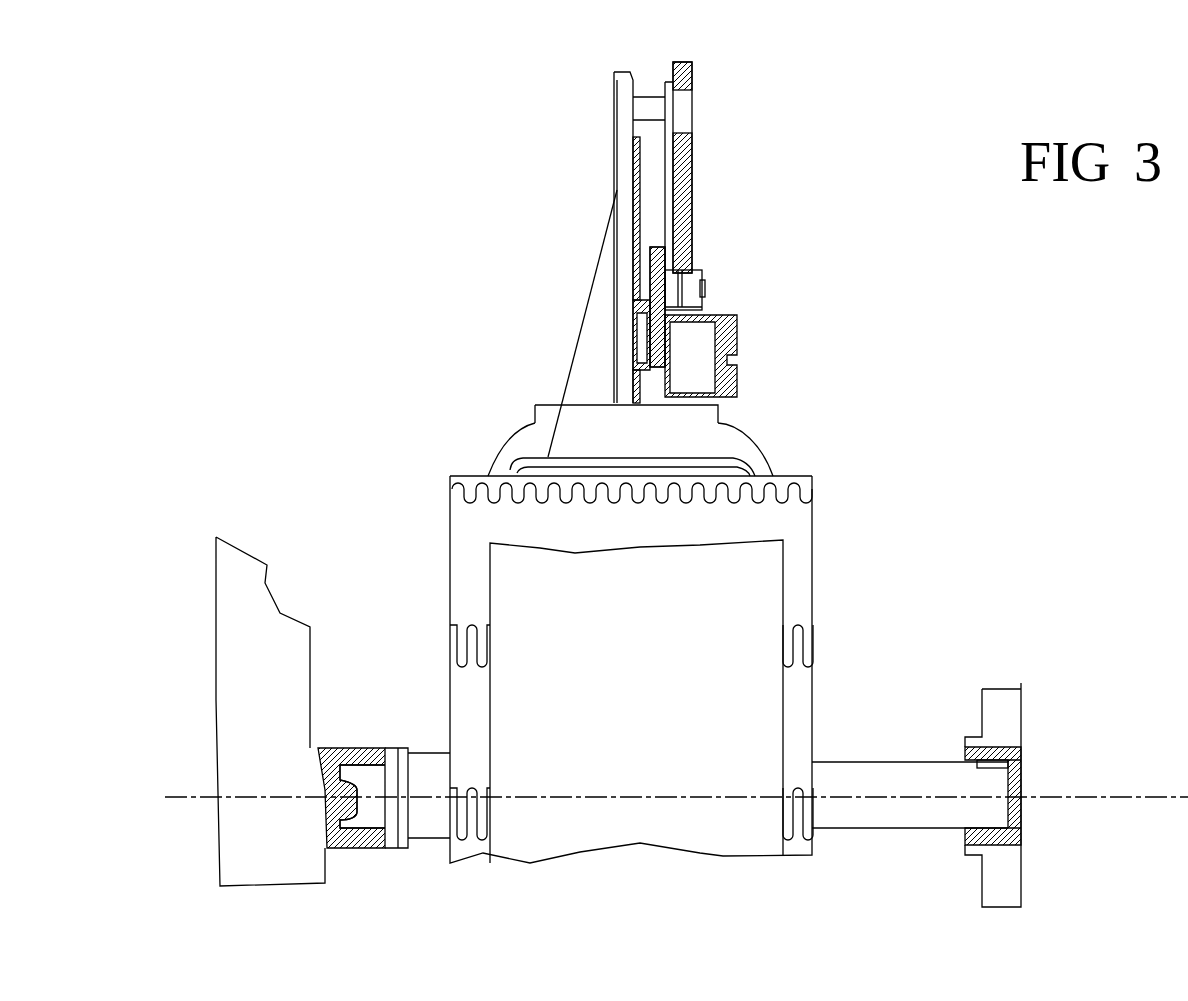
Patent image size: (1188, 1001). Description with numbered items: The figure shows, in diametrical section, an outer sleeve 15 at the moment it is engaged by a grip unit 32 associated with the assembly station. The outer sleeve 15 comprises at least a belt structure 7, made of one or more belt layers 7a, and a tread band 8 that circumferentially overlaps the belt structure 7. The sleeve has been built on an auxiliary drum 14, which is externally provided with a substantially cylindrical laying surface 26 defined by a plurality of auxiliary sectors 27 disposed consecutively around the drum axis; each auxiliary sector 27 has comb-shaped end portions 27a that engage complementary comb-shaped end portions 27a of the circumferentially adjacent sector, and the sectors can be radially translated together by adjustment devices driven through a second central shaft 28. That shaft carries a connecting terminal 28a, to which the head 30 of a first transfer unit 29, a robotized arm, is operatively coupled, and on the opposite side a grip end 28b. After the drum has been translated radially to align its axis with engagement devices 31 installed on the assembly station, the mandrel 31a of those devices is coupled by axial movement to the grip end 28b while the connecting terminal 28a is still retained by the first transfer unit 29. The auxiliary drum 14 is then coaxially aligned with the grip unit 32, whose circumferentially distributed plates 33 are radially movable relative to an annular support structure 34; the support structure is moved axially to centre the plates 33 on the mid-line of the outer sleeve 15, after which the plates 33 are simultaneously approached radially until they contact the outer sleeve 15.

The belt structure 7 is at (513, 458).
The belt layer 7a is at (578, 462).
The tread band 8 is at (605, 440).
The auxiliary drum 14 is at (800, 471).
The outer sleeve 15 is at (763, 453).
The laying surface 26 is at (468, 476).
The auxiliary sector 27 is at (617, 617).
The comb-shaped end portion 27a is at (473, 622).
The second central shaft 28 is at (827, 777).
The connecting terminal 28a is at (368, 780).
The grip end 28b is at (917, 777).
The first transfer unit 29 is at (213, 584).
The head 30 is at (357, 848).
The engagement devices 31 is at (1067, 718).
The mandrel 31a is at (973, 740).
The grip unit 32 is at (690, 152).
The plates 33 is at (647, 413).
The annular support structure 34 is at (737, 320).